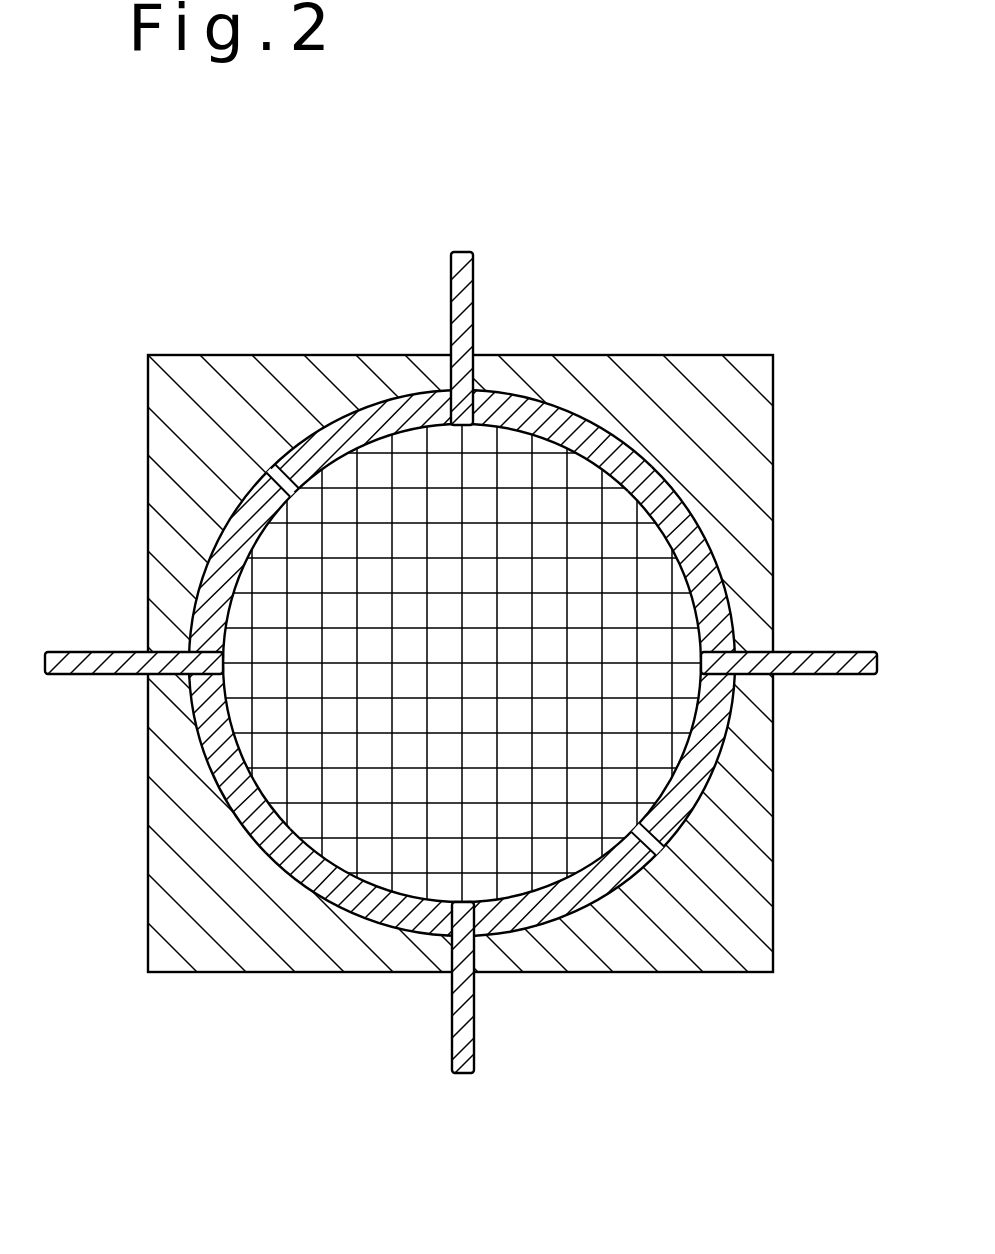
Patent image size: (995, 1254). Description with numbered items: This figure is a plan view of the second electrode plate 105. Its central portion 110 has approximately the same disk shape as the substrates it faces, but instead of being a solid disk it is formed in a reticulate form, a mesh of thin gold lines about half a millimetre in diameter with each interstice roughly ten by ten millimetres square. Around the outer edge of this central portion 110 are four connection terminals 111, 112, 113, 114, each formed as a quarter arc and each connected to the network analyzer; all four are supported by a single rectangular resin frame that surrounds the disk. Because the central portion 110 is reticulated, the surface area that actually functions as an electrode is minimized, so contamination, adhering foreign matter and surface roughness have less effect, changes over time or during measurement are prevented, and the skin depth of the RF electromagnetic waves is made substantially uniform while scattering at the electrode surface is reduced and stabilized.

The second electrode plate 105 is at (741, 228).
The central portion 110 is at (667, 518).
The connection terminal 111 is at (532, 913).
The connection terminal 112 is at (107, 665).
The connection terminal 113 is at (549, 412).
The connection terminal 114 is at (707, 788).